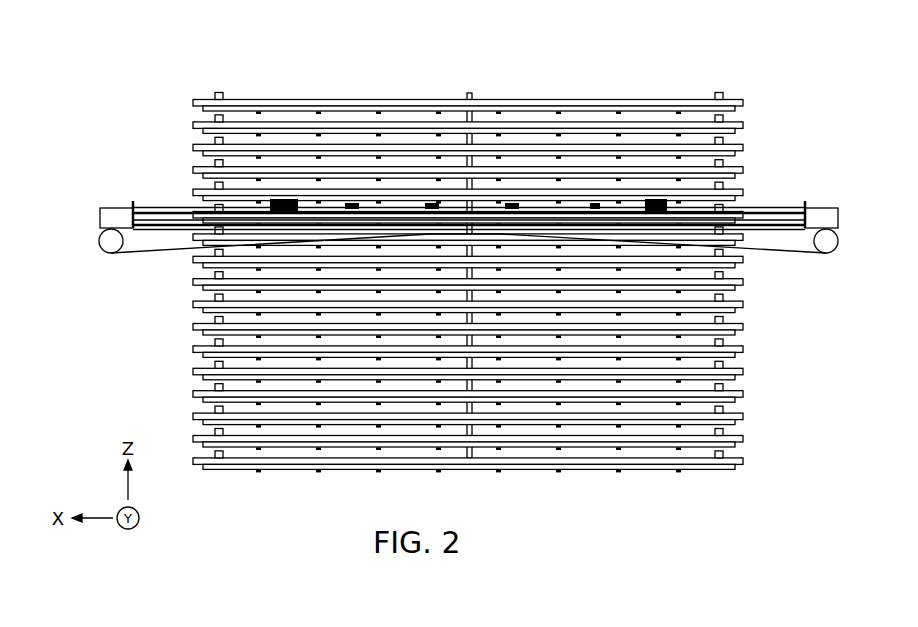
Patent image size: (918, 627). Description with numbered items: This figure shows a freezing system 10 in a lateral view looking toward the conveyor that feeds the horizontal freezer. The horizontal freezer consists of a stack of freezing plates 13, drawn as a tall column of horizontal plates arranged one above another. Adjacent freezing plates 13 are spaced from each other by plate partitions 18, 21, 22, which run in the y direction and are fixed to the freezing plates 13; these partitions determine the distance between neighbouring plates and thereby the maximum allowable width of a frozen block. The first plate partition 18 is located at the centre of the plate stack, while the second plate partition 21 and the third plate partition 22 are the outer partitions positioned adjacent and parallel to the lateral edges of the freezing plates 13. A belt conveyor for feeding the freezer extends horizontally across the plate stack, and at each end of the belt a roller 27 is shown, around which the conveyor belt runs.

The freezing system 10 is at (483, 40).
The freezing plates 13 is at (735, 131).
The first plate partition 18 is at (467, 96).
The second plate partition 21 is at (715, 96).
The third plate partition 22 is at (215, 99).
The roller of a belt conveyor 27 is at (120, 240).